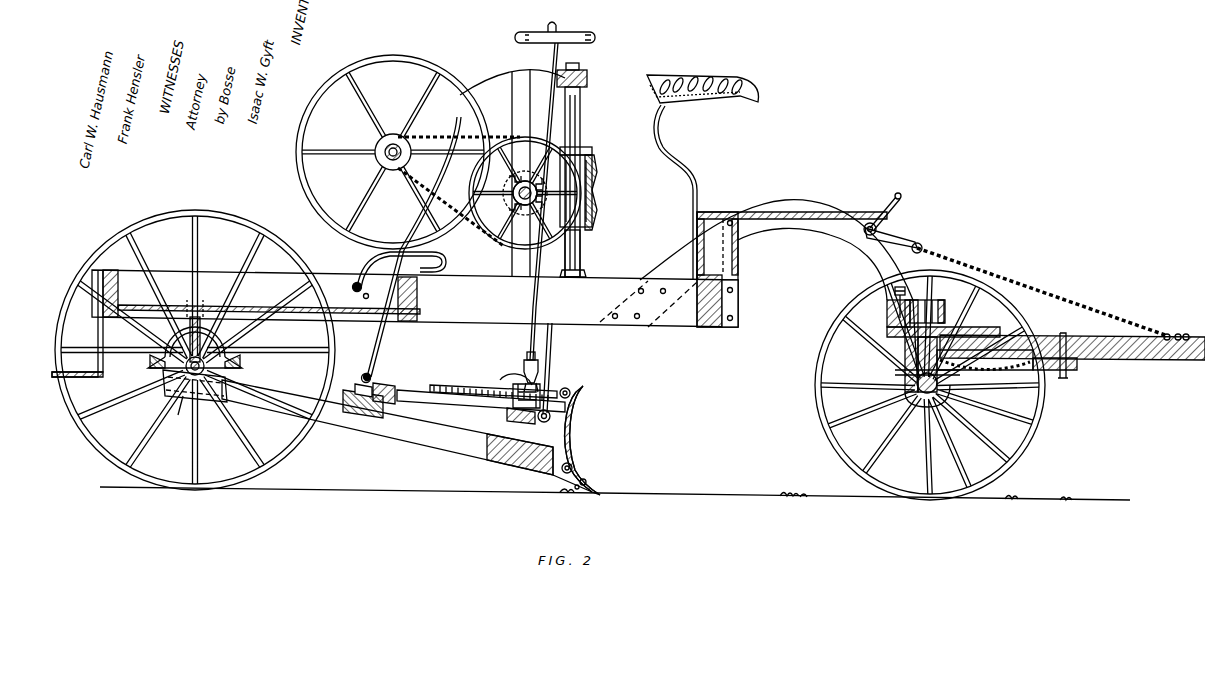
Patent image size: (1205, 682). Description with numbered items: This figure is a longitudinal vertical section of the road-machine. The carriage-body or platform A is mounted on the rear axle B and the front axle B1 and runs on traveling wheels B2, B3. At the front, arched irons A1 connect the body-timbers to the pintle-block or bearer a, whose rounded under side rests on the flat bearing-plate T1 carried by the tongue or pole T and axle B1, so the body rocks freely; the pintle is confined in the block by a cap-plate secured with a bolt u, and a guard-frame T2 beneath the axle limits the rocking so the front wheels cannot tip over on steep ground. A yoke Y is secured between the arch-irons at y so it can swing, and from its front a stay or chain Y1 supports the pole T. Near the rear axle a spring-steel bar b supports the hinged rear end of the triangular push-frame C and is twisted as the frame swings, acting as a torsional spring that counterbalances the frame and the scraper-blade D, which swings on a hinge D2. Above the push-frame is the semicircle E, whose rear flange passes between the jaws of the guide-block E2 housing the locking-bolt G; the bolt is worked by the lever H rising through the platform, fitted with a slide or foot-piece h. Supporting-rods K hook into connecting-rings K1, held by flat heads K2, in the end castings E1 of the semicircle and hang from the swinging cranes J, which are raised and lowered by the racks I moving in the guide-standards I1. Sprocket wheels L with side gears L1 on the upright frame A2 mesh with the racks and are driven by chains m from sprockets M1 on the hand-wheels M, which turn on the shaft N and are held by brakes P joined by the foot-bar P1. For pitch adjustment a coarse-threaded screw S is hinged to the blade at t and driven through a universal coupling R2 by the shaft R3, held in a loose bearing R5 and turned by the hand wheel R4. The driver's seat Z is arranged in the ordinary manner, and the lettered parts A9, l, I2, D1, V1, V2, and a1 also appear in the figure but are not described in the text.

The traveling wheel B2 is at (205, 212).
The traveling wheel B3 is at (1032, 412).
The carriage-body A is at (415, 298).
The seat standard A9 is at (722, 218).
The arched irons A1 is at (820, 226).
The upright frame A2 is at (512, 168).
The driver's seat Z is at (703, 166).
The hand-wheel M is at (393, 138).
The sprocket M1 is at (393, 143).
The axial shaft N is at (384, 158).
The drive-chain m is at (459, 181).
The sprocket wheel L is at (525, 201).
The gear L1 is at (525, 183).
The clutch sleeve l is at (534, 188).
The vertically-moving rack I is at (582, 149).
The vertical guide-standard I1 is at (572, 191).
The bearing post I2 is at (580, 114).
The swinging crane J is at (593, 210).
The hand wheel R4 is at (555, 26).
The loose bearing R5 is at (584, 86).
The shaft R3 is at (535, 298).
The universal coupling R2 is at (527, 366).
The supporting-rod K is at (553, 368).
The connecting-ring K1 is at (527, 391).
The flat head K2 is at (551, 416).
The locking-bolt lever H is at (413, 249).
The brake P is at (401, 269).
The foot-bar P1 is at (352, 289).
The slide h is at (368, 304).
The rear axle B is at (195, 330).
The bar b is at (195, 398).
The push-frame C is at (387, 427).
The semicircle E is at (481, 402).
The screw S is at (493, 386).
The guide-block E2 is at (377, 390).
The locking-bolt G is at (381, 385).
The end casting E1 is at (528, 426).
The hinge t is at (566, 383).
The scraper-blade D is at (579, 440).
The plow point pivot D1 is at (585, 474).
The hinge D2 is at (575, 487).
The yoke Y is at (891, 220).
The pivot y is at (870, 239).
The chain Y1 is at (1038, 289).
The chain connection V2 is at (1176, 327).
The rear axle bracket V1 is at (906, 372).
The tongue T is at (1072, 357).
The bearing-plate T1 is at (886, 333).
The guard-frame T2 is at (898, 390).
The pintle-block a is at (888, 313).
The bearing cap a1 is at (929, 304).
The bolt u is at (898, 295).
The front axle B1 is at (976, 392).